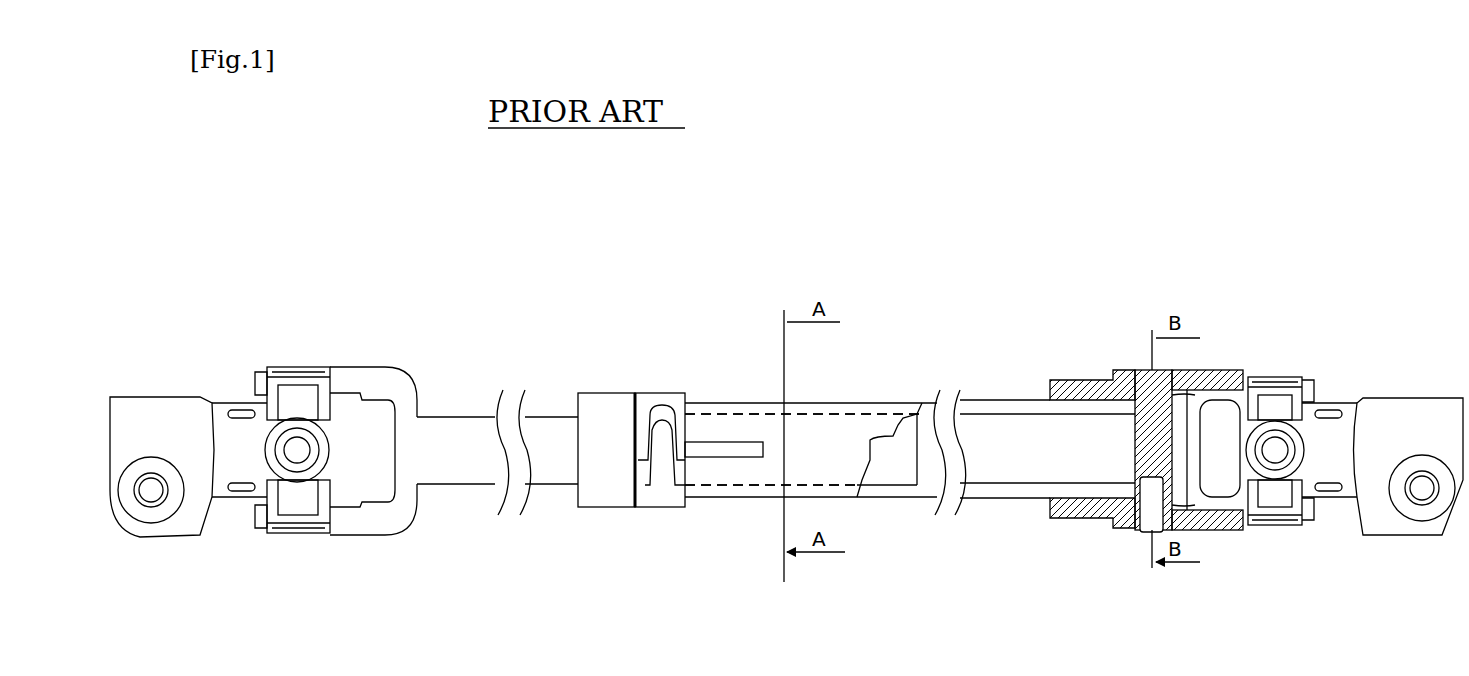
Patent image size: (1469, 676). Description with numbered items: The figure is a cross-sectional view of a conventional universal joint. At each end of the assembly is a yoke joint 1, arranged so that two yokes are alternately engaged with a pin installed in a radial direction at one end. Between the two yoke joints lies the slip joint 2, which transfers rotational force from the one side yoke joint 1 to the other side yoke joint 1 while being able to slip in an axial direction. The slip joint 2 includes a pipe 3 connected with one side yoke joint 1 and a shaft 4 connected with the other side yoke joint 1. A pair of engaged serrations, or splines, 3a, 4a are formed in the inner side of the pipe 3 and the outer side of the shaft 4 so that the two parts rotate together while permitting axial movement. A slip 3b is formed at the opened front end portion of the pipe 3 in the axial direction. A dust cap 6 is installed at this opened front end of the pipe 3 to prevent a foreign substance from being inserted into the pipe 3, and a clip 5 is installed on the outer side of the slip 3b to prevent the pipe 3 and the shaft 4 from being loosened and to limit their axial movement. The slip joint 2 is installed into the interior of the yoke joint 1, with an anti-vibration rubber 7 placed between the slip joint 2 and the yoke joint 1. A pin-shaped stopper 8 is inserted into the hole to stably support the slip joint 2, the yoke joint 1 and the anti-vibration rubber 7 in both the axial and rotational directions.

The yoke joint 1 is at (1255, 340).
The slip joint 2 is at (898, 362).
The pipe 3 is at (1030, 497).
The serration 3a is at (762, 480).
The serration 4a is at (802, 509).
The slip 3b is at (742, 440).
The shaft 4 is at (475, 475).
The clip 5 is at (670, 400).
The dust cap 6 is at (610, 415).
The anti-vibration rubber 7 is at (1083, 510).
The pin-shaped stopper 8 is at (1150, 455).